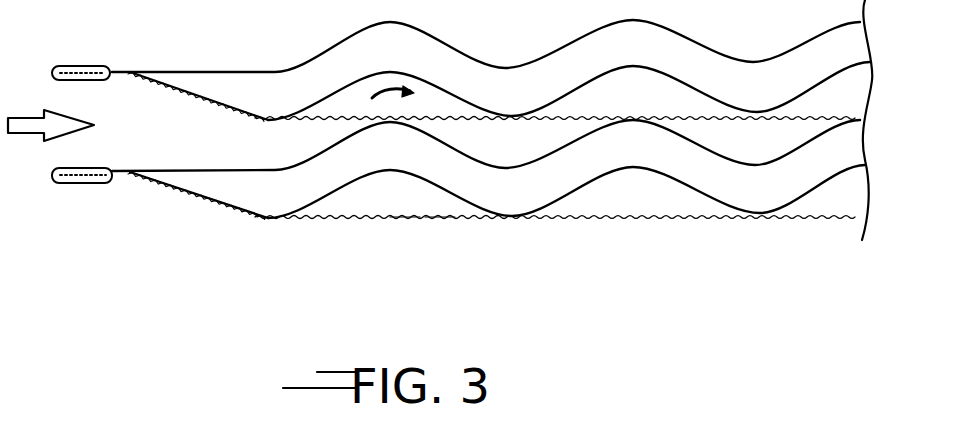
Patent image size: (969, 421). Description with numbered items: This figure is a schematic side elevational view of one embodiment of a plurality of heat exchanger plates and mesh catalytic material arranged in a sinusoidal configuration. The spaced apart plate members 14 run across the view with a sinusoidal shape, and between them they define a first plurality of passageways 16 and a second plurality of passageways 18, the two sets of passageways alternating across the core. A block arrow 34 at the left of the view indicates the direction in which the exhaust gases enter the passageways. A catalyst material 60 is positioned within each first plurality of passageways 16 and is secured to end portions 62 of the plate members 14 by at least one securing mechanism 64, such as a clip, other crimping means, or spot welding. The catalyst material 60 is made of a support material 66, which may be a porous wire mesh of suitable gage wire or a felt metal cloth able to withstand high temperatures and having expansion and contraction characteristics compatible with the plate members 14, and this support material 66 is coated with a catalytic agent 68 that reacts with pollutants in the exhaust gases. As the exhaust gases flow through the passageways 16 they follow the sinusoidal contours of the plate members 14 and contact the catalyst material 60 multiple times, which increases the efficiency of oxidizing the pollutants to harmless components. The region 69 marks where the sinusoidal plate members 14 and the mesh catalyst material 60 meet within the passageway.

The plate member 14 is at (208, 169).
The first plurality of passageways 16 is at (256, 113).
The second plurality of passageways 18 is at (491, 119).
The flow direction arrow 34 is at (15, 137).
The catalyst material 60 is at (343, 226).
The end portion 62 is at (134, 73).
The securing mechanism 64 is at (80, 36).
The support material 66 is at (404, 220).
The catalytic agent 68 is at (440, 220).
The junction 69 is at (358, 127).